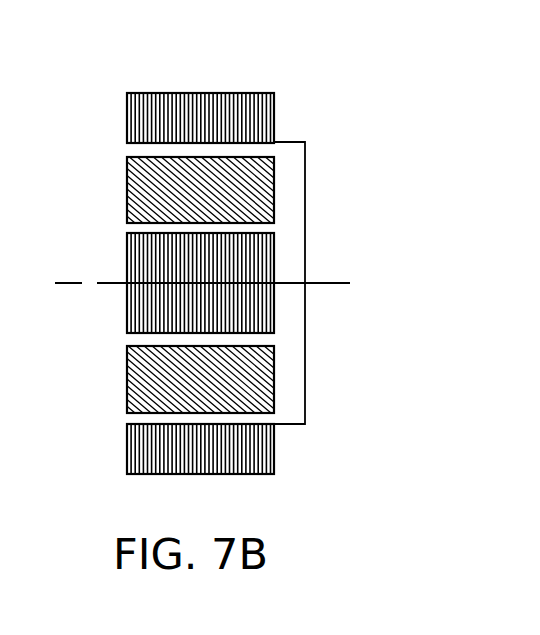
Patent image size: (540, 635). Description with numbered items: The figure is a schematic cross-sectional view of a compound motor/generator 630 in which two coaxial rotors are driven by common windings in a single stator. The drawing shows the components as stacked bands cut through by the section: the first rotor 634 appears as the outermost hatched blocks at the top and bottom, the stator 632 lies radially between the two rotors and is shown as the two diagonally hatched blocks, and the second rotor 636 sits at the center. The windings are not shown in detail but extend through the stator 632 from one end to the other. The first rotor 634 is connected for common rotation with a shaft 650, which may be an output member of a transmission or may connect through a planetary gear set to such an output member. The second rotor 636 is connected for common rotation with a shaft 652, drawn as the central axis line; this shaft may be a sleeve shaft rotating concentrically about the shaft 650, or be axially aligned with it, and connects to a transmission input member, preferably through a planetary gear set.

The compound motor/generator 630 is at (326, 431).
The stator 632 is at (267, 168).
The first rotor 634 is at (243, 93).
The second rotor 636 is at (128, 264).
The shaft 650 is at (330, 283).
The shaft 652 is at (90, 290).